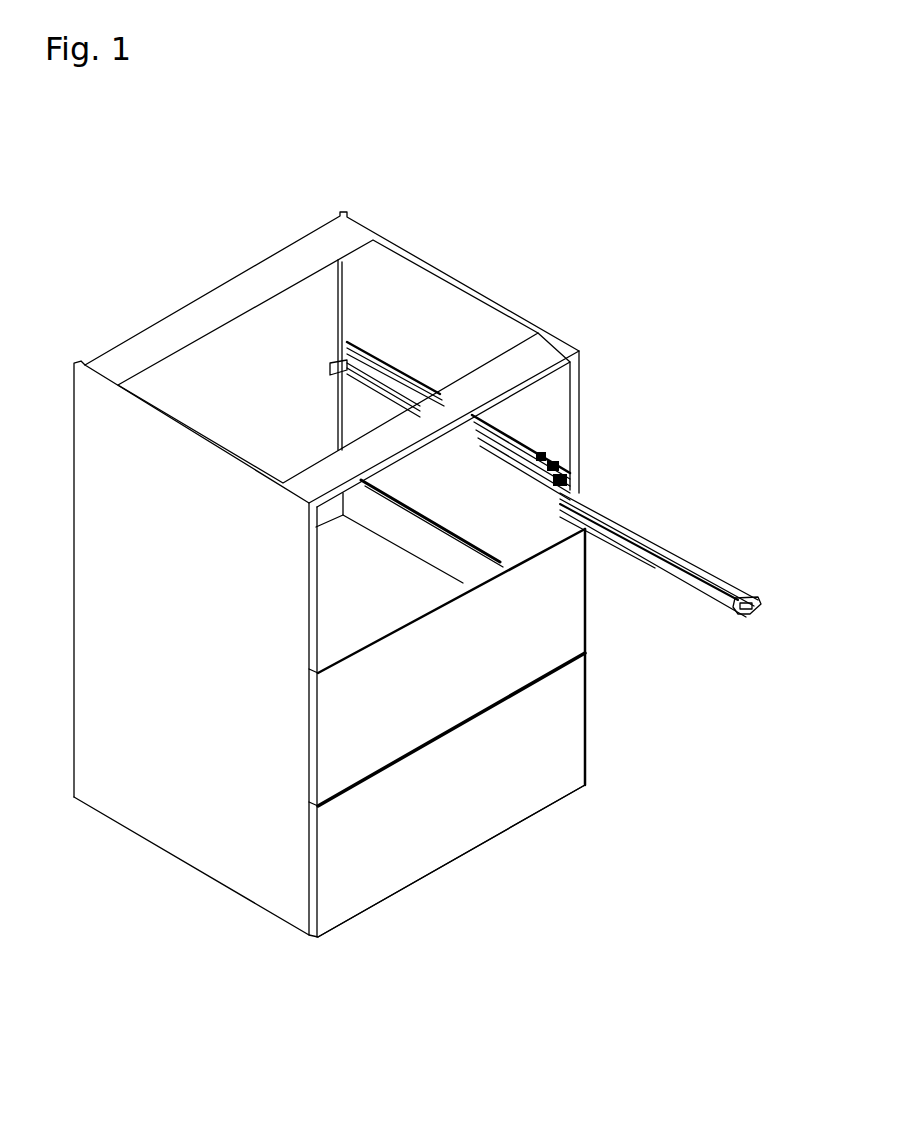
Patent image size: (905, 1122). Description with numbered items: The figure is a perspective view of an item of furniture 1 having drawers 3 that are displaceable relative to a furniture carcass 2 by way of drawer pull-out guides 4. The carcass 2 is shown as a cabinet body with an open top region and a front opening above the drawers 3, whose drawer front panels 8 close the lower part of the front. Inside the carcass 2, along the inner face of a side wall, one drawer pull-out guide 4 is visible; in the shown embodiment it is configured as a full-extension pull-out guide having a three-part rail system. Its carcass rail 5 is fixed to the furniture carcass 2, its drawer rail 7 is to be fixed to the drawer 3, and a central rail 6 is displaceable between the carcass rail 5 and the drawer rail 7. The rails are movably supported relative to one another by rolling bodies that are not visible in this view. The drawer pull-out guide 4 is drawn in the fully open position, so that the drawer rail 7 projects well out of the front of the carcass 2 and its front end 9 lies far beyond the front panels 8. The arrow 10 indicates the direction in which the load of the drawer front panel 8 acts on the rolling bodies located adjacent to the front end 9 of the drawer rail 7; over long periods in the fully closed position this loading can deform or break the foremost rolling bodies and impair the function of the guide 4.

The item of furniture 1 is at (147, 880).
The furniture carcass 2 is at (265, 888).
The drawer 3 is at (593, 590).
The drawer pull-out guide 4 is at (437, 373).
The carcass rail 5 is at (377, 383).
The central rail 6 is at (550, 463).
The drawer rail 7 is at (637, 533).
The drawer front panel 8 is at (570, 623).
The front end of the drawer rail 9 is at (760, 602).
The arrow 10 is at (757, 615).